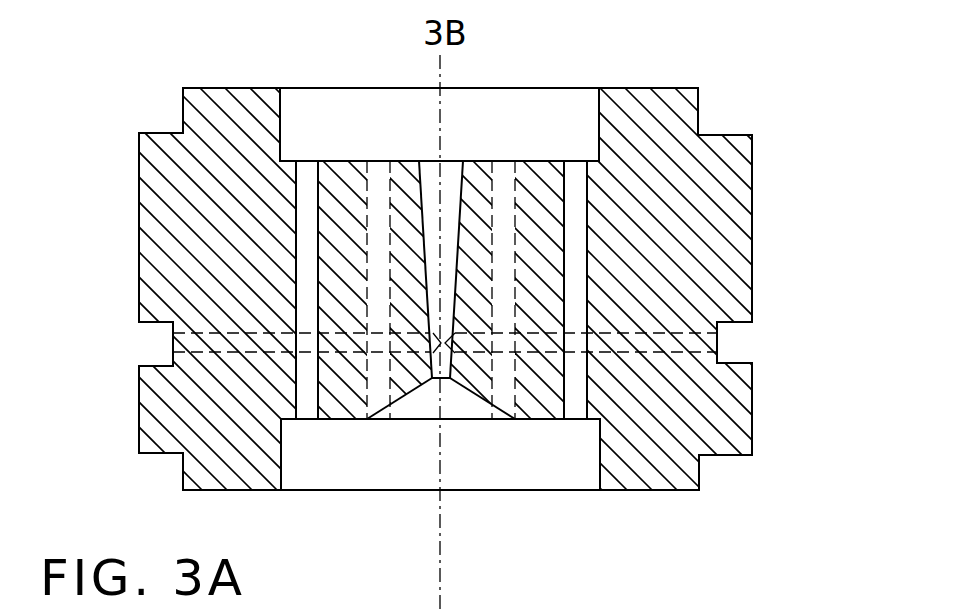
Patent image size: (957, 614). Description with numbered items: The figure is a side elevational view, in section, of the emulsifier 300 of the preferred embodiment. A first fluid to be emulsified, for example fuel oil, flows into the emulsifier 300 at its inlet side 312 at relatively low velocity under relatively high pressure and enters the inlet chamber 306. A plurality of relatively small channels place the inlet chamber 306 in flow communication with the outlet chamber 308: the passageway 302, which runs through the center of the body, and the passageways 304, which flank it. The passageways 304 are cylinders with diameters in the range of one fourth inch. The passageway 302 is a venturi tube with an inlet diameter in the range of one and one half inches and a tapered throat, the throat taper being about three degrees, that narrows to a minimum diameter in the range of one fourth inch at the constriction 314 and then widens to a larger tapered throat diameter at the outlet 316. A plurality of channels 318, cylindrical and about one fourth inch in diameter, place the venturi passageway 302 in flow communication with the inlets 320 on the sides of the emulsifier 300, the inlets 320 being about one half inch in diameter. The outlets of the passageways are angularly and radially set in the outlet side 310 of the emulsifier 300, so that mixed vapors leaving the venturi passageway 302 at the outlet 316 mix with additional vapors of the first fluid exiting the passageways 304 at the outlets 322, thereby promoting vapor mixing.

The emulsifier 300 is at (478, 299).
The passageway 302 is at (447, 207).
The passageways 304 is at (578, 195).
The inlet chamber 306 is at (527, 468).
The outlet chamber 308 is at (340, 112).
The outlet side 310 is at (383, 88).
The inlet side 312 is at (383, 490).
The constriction 314 is at (473, 407).
The outlet 316 is at (456, 161).
The channels 318 is at (265, 343).
The inlets 320 is at (162, 340).
The outlets 322 is at (375, 160).